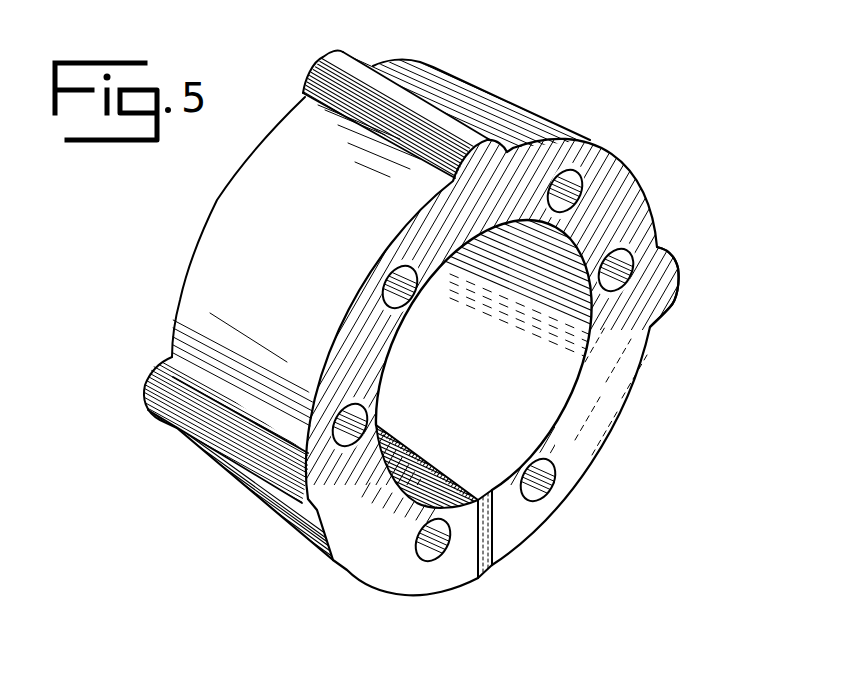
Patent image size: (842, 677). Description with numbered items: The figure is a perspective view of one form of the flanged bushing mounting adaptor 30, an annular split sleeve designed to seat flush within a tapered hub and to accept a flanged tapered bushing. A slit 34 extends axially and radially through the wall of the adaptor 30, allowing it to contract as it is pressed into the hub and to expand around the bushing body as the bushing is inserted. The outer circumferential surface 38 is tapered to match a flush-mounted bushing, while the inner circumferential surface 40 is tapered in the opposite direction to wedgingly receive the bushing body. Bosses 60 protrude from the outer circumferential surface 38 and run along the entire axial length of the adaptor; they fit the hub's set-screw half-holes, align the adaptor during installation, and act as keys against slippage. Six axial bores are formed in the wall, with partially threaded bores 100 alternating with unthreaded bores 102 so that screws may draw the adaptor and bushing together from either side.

The flanged bushing mounting adaptor 30 is at (613, 118).
The slit 34 is at (483, 558).
The outer circumferential surface 38 is at (222, 234).
The inner circumferential surface 40 is at (515, 404).
The bosses 60 is at (333, 64).
The threaded bores 100 is at (583, 188).
The unthreaded bores 102 is at (390, 264).